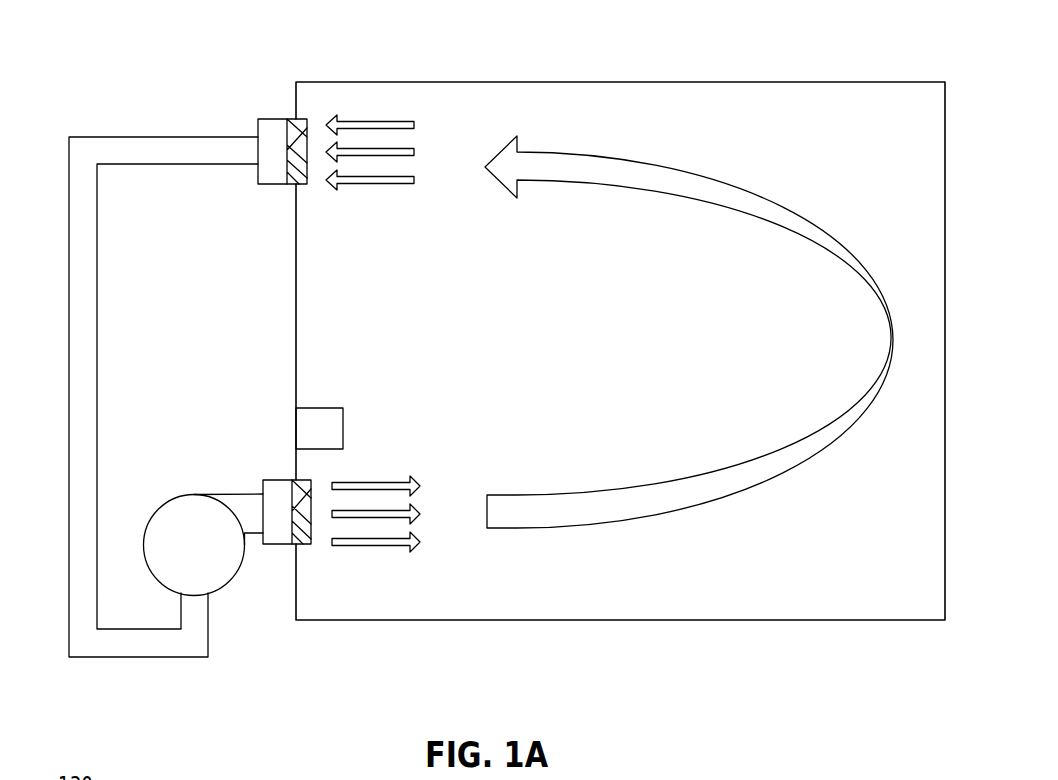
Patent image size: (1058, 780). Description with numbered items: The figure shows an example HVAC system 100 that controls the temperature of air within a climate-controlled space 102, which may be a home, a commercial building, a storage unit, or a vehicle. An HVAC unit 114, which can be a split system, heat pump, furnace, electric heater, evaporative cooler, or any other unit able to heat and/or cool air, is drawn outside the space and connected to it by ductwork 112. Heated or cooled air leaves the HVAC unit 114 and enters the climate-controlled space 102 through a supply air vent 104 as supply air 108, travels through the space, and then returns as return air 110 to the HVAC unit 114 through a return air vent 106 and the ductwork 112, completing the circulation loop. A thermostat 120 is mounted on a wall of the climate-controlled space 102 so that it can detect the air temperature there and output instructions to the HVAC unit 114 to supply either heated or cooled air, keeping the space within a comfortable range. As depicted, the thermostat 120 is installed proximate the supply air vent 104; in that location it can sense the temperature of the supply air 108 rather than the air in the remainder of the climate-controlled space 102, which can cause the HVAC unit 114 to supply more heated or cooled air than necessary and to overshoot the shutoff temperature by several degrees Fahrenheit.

The HVAC system 100 is at (266, 45).
The climate-controlled space 102 is at (660, 82).
The supply air vent 104 is at (311, 543).
The return air vent 106 is at (307, 183).
The supply air 108 is at (408, 480).
The airflow into second heat exchanger 110 is at (412, 189).
The ductwork 112 is at (172, 165).
The HVAC unit 114 is at (170, 496).
The thermostat 120 is at (330, 408).